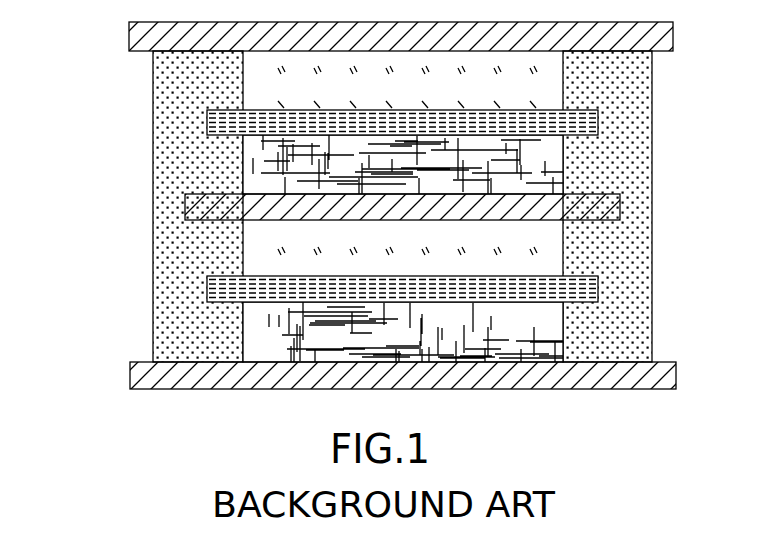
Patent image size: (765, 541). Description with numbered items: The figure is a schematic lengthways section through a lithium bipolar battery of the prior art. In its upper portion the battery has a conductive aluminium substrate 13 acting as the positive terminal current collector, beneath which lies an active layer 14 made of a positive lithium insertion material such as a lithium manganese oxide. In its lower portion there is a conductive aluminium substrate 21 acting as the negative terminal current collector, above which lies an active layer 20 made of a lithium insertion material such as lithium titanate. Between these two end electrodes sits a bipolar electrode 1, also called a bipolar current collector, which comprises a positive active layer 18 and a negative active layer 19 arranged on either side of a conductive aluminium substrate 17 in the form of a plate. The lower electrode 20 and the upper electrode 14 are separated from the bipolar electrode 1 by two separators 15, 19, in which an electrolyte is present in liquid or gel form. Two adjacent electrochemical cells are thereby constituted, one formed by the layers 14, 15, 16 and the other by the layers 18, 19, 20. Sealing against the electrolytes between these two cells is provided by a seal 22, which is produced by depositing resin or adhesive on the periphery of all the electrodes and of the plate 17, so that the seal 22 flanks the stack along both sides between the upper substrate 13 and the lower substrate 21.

The bipolar electrode 1 is at (40, 145).
The conductive aluminium substrate 13 is at (143, 42).
The active layer 14 is at (255, 71).
The separator 15 is at (228, 122).
The electrochemical cell component 16 is at (252, 163).
The conductive aluminium substrate 17 is at (610, 206).
The positive active layer 18 is at (258, 248).
The negative active layer 19 is at (228, 292).
The active layer 20 is at (258, 332).
The conductive aluminium substrate 21 is at (140, 380).
The seal 22 is at (627, 253).